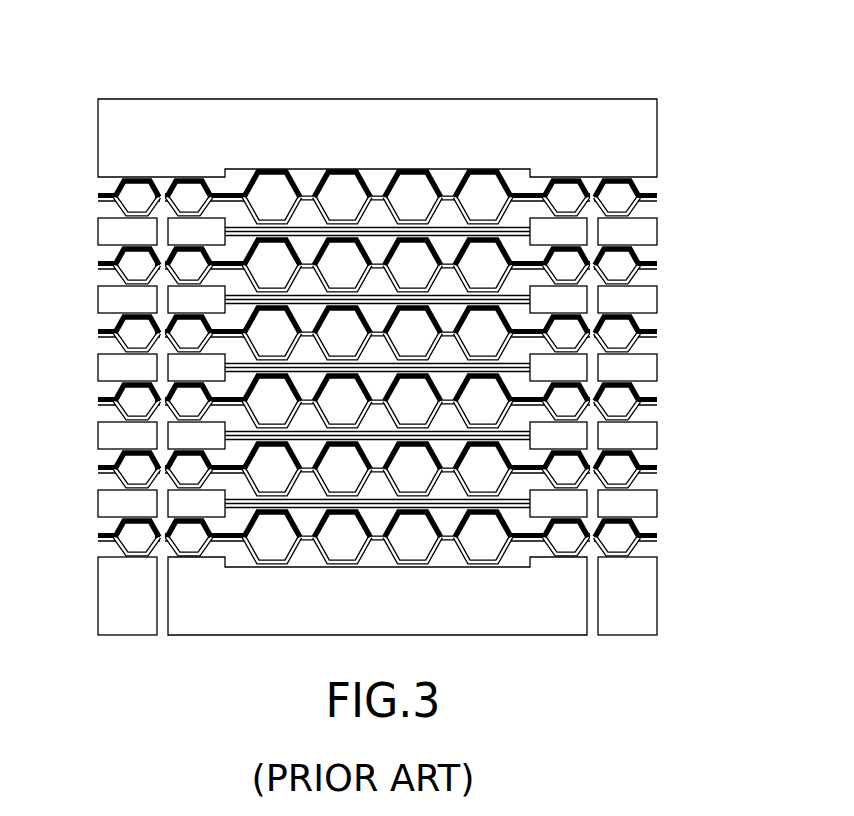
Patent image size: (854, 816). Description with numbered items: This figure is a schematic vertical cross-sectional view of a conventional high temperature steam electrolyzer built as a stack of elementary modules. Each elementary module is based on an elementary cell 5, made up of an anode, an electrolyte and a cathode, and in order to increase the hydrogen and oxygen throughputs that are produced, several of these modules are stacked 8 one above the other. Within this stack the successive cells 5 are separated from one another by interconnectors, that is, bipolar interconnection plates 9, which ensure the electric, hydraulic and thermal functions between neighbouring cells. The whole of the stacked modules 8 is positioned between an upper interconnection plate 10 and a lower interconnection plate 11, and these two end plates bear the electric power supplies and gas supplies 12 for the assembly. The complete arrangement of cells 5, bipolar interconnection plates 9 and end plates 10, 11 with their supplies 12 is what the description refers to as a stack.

The elementary cell 5 is at (492, 297).
The stack of elementary modules 8 is at (378, 298).
The bipolar interconnection plate 9 is at (660, 398).
The upper interconnection plate 10 is at (645, 134).
The lower interconnection plate 11 is at (645, 593).
The gas supplies 12 is at (163, 630).